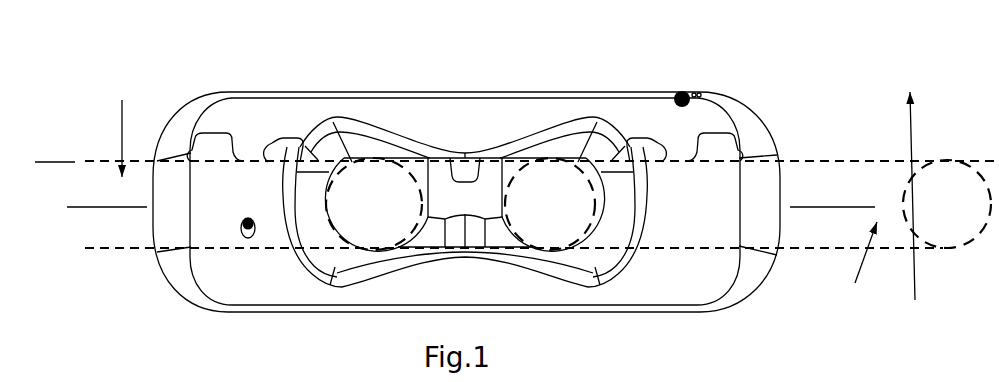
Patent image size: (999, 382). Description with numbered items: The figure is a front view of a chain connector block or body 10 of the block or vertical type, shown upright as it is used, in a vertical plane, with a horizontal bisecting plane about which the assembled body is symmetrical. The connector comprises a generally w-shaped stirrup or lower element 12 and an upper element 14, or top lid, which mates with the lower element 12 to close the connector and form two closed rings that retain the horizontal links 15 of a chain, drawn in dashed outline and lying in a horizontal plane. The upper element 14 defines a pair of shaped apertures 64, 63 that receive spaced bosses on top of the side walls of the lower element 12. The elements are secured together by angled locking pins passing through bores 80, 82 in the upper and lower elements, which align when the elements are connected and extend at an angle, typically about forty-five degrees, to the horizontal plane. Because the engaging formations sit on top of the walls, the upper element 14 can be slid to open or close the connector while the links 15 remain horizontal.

The chain connector block or body 10 is at (797, 161).
The lower element 12 is at (670, 278).
The upper element 14 is at (459, 118).
The horizontal links 15 is at (494, 186).
The shaped aperture 63 is at (283, 138).
The shaped aperture 64 is at (213, 133).
The bore 80 is at (240, 250).
The bore 82 is at (688, 89).